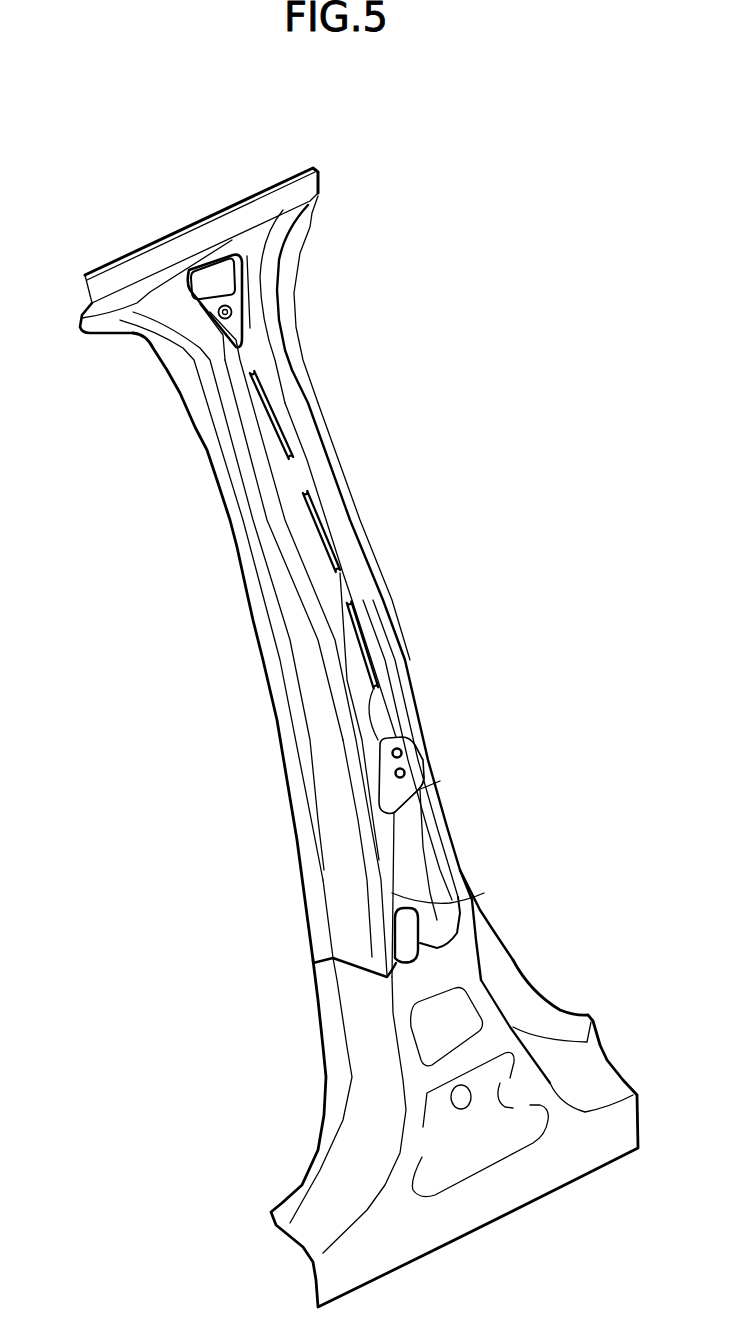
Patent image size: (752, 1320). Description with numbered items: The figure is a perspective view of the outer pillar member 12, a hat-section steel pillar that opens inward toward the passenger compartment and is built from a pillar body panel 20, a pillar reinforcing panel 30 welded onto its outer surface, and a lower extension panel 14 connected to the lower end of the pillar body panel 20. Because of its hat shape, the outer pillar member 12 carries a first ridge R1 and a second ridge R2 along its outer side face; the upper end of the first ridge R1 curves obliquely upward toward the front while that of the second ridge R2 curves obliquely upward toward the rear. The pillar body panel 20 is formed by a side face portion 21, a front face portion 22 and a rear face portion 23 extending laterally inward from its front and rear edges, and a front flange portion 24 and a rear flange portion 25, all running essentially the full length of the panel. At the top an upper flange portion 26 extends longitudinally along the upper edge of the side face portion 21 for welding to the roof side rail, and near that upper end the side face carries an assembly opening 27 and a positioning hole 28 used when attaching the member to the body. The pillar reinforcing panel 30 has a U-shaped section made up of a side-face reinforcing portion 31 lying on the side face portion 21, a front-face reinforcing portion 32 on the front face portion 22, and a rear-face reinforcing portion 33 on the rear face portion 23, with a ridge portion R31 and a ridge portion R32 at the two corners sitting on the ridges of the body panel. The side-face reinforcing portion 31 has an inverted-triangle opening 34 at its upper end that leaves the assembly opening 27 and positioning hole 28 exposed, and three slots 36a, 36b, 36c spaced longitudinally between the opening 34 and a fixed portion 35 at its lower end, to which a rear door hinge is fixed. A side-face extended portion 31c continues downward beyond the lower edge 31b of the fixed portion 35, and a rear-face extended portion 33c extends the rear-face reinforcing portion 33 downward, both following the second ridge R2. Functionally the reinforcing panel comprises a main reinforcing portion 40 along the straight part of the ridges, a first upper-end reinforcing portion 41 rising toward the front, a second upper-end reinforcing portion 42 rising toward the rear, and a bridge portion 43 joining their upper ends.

The outer pillar member 12 is at (527, 272).
The lower extension panel 14 is at (373, 1095).
The pillar body panel 20 is at (280, 765).
The side face portion 21 is at (413, 847).
The front face portion 22 is at (448, 778).
The rear face portion 23 is at (333, 818).
The front flange portion 24 is at (392, 588).
The rear flange portion 25 is at (270, 627).
The upper flange portion 26 is at (212, 232).
The assembly opening 27 is at (213, 287).
The positioning hole 28 is at (210, 318).
The pillar reinforcing panel 30 is at (408, 645).
The side-face reinforcing portion 31 is at (307, 467).
The lower edge 31b is at (415, 802).
The side-face extended portion 31c is at (392, 892).
The front-face reinforcing portion 32 is at (349, 512).
The rear-face reinforcing portion 33 is at (281, 505).
The rear-face extended portion 33c is at (365, 908).
The opening 34 is at (232, 312).
The fixed portion 35 is at (400, 740).
The slot 36a is at (260, 397).
The slot 36b is at (312, 533).
The slot 36c is at (350, 645).
The main reinforcing portion 40 is at (288, 462).
The first upper-end reinforcing portion 41 is at (258, 256).
The second upper-end reinforcing portion 42 is at (127, 333).
The bridge portion 43 is at (232, 240).
The first ridge R1 is at (310, 403).
The second ridge R2 is at (255, 438).
The ridge portion R31 is at (365, 553).
The ridge portion R32 is at (353, 700).